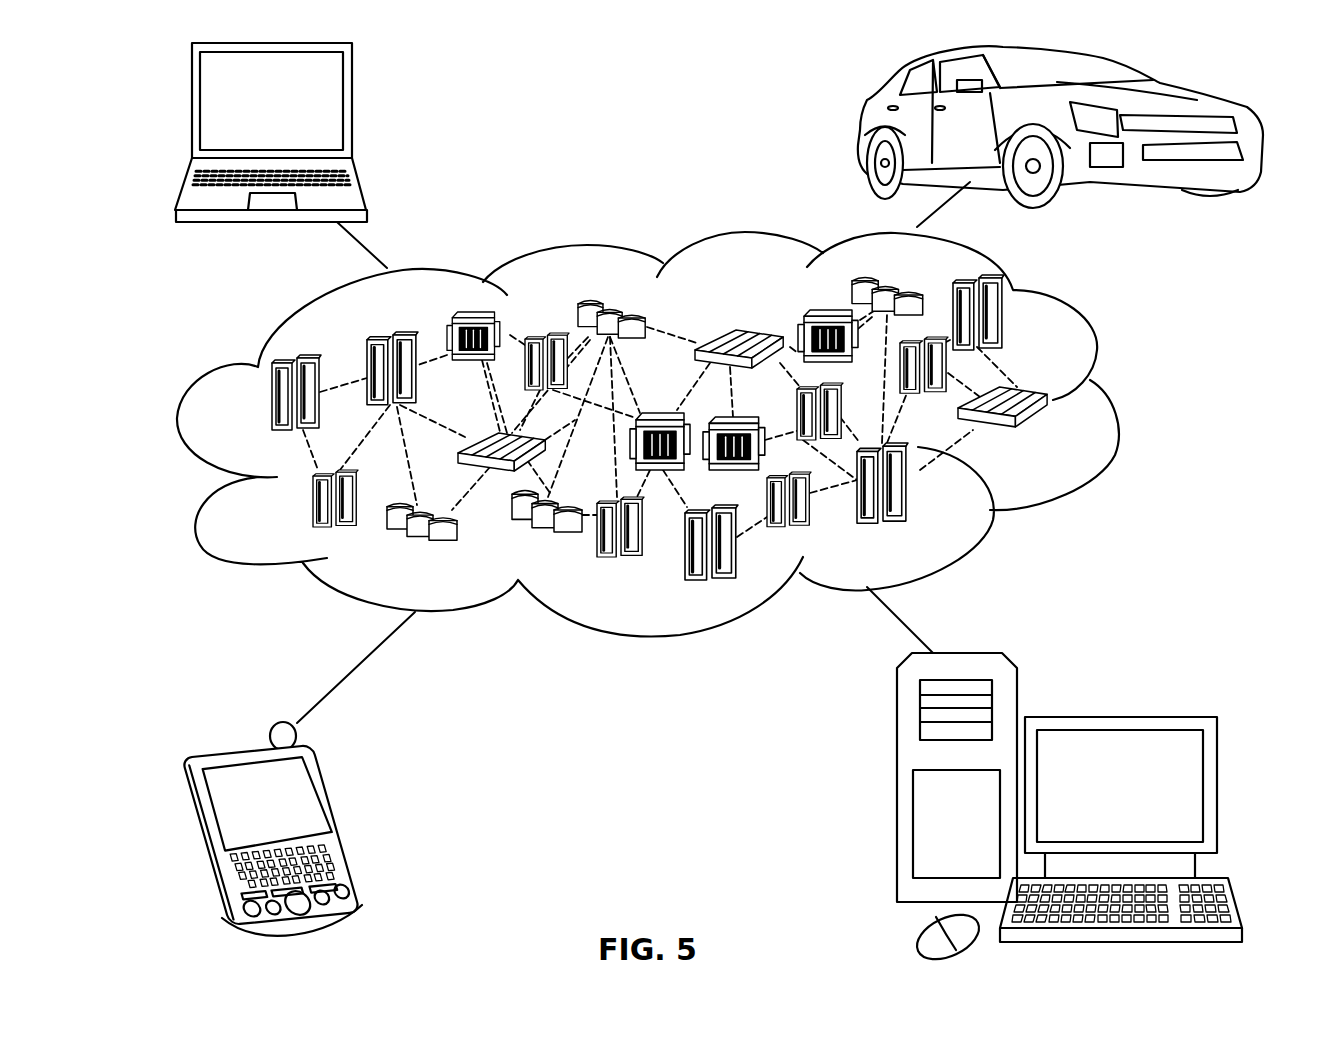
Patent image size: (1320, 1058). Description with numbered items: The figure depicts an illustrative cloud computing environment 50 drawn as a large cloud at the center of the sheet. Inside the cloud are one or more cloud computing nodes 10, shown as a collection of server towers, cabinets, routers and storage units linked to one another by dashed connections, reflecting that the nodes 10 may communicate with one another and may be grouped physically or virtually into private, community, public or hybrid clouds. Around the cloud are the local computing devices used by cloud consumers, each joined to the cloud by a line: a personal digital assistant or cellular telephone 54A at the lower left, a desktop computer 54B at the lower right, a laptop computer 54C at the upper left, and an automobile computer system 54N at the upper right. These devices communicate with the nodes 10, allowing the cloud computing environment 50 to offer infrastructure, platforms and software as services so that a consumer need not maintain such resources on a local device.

The cloud computing nodes 10 is at (1056, 440).
The cloud computing environment 50 is at (1118, 404).
The personal digital assistant or cellular telephone 54A is at (340, 818).
The desktop computer 54B is at (1118, 716).
The laptop computer 54C is at (352, 111).
The automobile computer system 54N is at (860, 127).